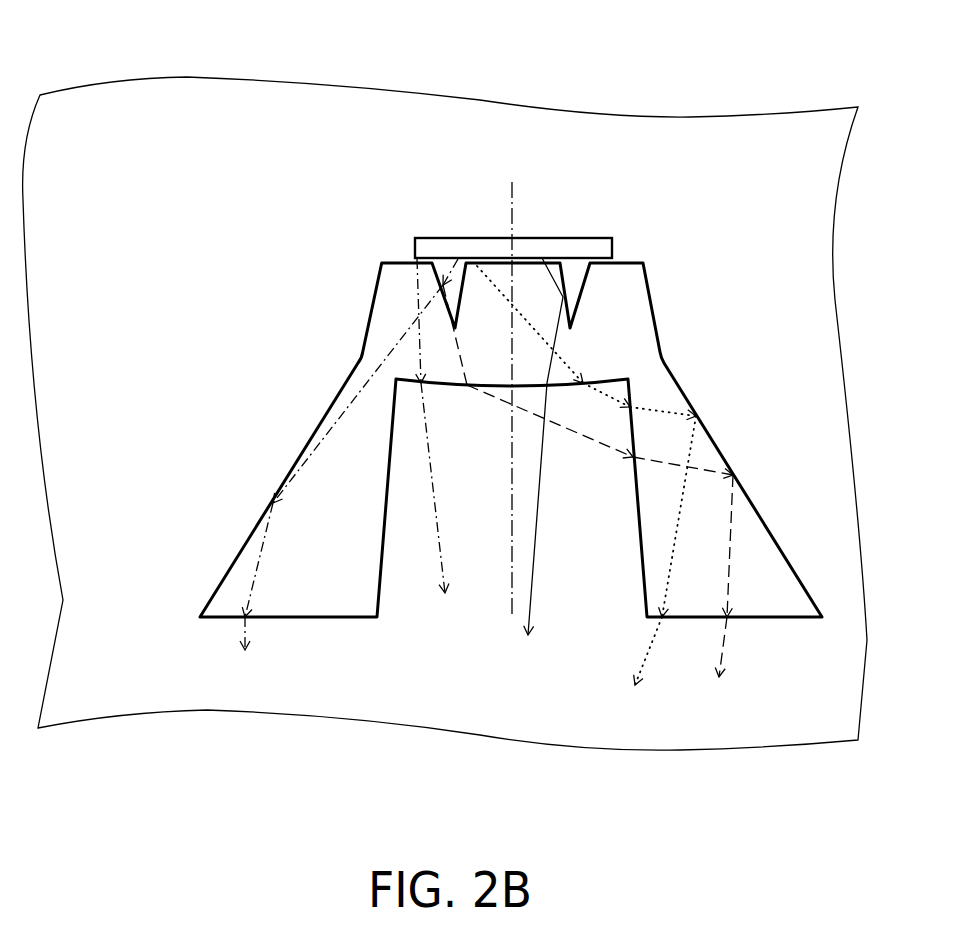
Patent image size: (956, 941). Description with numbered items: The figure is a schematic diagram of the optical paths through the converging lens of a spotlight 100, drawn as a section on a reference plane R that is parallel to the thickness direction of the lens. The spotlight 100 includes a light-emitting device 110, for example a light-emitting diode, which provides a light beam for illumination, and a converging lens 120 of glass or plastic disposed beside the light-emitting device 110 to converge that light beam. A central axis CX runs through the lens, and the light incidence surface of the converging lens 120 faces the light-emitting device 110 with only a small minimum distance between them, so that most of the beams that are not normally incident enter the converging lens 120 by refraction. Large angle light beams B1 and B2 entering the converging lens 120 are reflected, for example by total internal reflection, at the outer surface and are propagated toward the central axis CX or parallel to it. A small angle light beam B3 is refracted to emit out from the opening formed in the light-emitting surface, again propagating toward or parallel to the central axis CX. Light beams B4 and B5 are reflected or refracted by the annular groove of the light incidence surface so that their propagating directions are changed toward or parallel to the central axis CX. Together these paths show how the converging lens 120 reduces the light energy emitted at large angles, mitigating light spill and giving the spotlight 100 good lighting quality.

The reference plane R is at (183, 102).
The central axis CX is at (509, 383).
The spotlight 100 is at (605, 193).
The light-emitting device 110 is at (592, 250).
The converging lens 120 is at (537, 275).
The light beam B1 is at (586, 494).
The light beam B2 is at (588, 502).
The light beam B3 is at (437, 445).
The light beam B4 is at (346, 472).
The light beam B5 is at (539, 466).